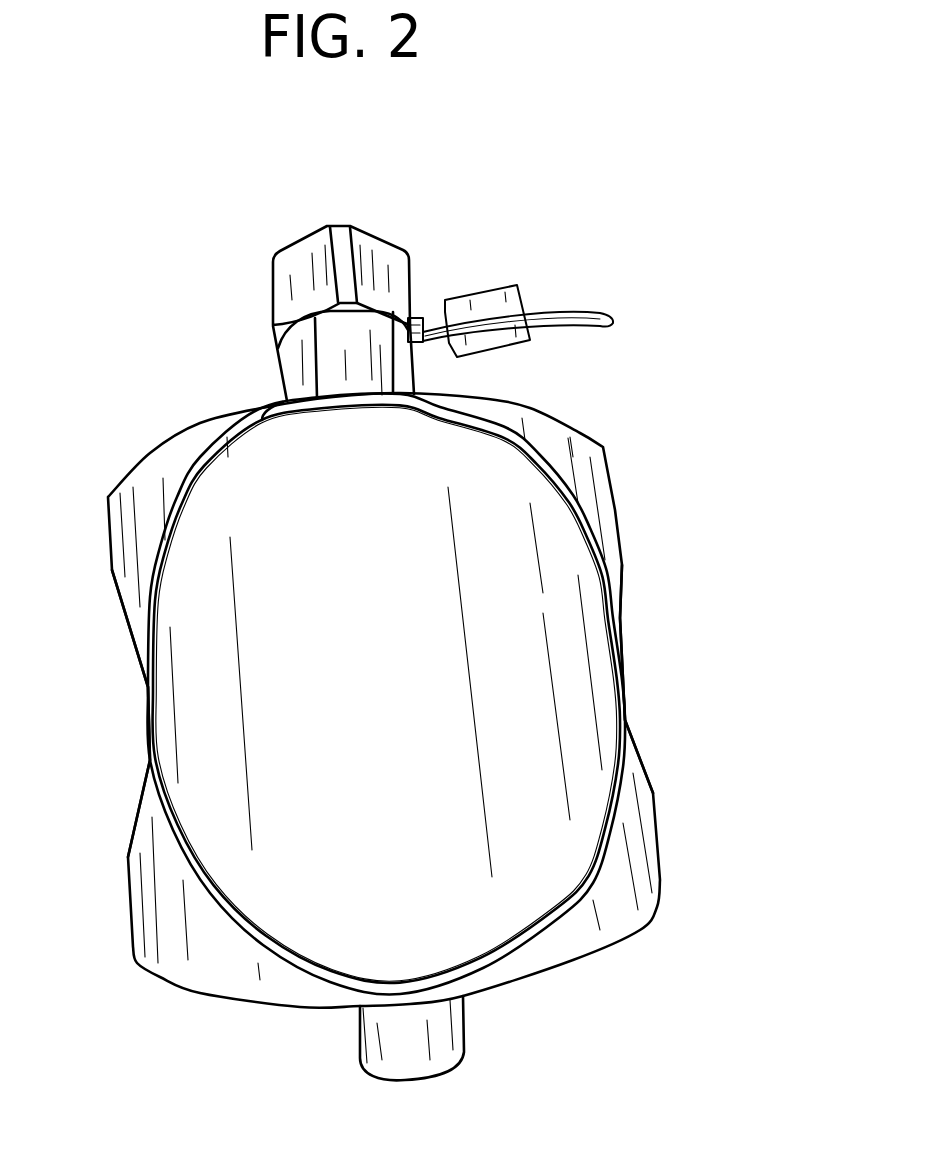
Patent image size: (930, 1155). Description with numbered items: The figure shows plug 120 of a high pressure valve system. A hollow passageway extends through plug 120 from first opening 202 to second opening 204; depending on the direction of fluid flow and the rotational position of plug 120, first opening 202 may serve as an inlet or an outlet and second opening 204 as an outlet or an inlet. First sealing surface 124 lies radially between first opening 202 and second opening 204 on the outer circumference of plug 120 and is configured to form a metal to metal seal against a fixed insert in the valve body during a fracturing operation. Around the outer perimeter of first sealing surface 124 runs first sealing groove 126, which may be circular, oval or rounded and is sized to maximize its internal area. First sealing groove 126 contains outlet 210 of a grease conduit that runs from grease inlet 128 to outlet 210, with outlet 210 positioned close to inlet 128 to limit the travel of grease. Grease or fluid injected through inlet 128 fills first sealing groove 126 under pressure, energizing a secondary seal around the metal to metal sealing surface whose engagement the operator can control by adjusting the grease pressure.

The plug 120 is at (118, 217).
The first sealing surface 124 is at (460, 443).
The first sealing groove 126 is at (323, 420).
The grease inlet 128 is at (377, 1040).
The first opening 202 is at (147, 688).
The second opening 204 is at (610, 677).
The outlet 210 is at (503, 957).